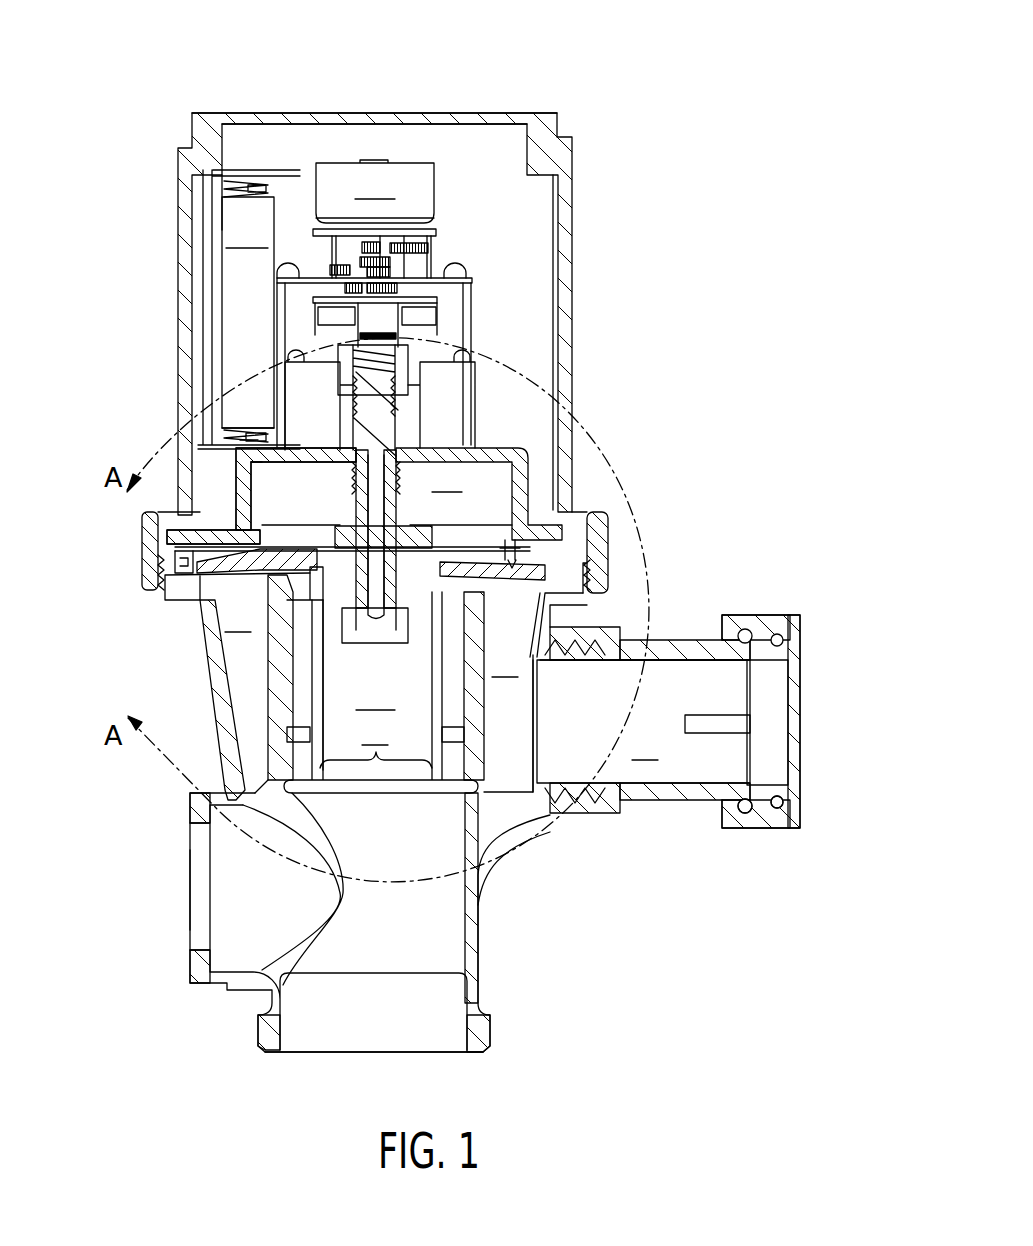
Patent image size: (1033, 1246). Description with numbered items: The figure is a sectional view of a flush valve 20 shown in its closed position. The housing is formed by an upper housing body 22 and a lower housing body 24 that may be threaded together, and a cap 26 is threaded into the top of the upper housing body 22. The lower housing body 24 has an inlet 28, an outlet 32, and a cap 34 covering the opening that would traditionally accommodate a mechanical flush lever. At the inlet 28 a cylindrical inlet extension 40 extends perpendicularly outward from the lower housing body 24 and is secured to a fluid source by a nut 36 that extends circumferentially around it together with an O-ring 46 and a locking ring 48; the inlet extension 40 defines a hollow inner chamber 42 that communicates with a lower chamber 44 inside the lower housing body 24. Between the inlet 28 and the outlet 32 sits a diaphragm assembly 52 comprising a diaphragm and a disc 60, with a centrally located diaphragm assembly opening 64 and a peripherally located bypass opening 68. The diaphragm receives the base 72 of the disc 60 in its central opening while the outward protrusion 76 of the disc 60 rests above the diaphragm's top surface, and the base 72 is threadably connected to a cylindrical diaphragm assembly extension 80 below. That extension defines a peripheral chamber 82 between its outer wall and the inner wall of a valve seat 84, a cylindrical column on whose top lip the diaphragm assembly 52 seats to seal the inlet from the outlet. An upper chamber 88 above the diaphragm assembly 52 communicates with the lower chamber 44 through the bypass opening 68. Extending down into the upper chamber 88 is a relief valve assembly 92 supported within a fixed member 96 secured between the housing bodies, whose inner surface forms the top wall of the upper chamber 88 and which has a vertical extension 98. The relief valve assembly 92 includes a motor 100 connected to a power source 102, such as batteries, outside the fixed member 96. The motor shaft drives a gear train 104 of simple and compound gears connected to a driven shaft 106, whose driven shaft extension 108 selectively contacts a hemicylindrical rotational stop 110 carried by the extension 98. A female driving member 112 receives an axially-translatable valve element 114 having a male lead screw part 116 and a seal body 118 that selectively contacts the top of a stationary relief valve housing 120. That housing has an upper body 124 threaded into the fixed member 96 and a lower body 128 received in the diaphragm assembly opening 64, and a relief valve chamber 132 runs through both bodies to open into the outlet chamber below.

The flush valve 20 is at (672, 104).
The upper housing body 22 is at (180, 232).
The lower housing body 24 is at (477, 940).
The cap 26 is at (527, 115).
The inlet 28 is at (802, 723).
The outlet 32 is at (373, 1052).
The cap 34 is at (190, 887).
The nut 36 is at (758, 617).
The inlet extension 40 is at (693, 798).
The inner chamber 42 is at (643, 710).
The lower chamber 44 is at (406, 692).
The O-ring 46 is at (777, 807).
The locking ring 48 is at (742, 815).
The diaphragm assembly 52 is at (273, 500).
The disc 60 is at (433, 544).
The diaphragm assembly opening 64 is at (388, 643).
The bypass opening 68 is at (522, 568).
The base 72 is at (412, 588).
The outward protrusion 76 is at (265, 560).
The diaphragm assembly extension 80 is at (381, 692).
The peripheral chamber 82 is at (298, 678).
The valve seat 84 is at (278, 700).
The upper chamber 88 is at (461, 492).
The relief valve assembly 92 is at (515, 345).
The fixed member 96 is at (487, 451).
The extension 98 is at (287, 303).
The motor 100 is at (375, 191).
The power source 102 is at (249, 309).
The gear train 104 is at (456, 259).
The driven shaft 106 is at (378, 321).
The driven shaft extension 108 is at (322, 315).
The rotational stop 110 is at (420, 320).
The female driving member 112 is at (352, 388).
The axially-translatable valve element 114 is at (378, 418).
The male lead screw part 116 is at (402, 371).
The seal body 118 is at (352, 446).
The stationary relief valve housing 120 is at (353, 507).
The upper body 124 is at (353, 462).
The lower body 128 is at (370, 550).
The relief valve chamber 132 is at (378, 612).